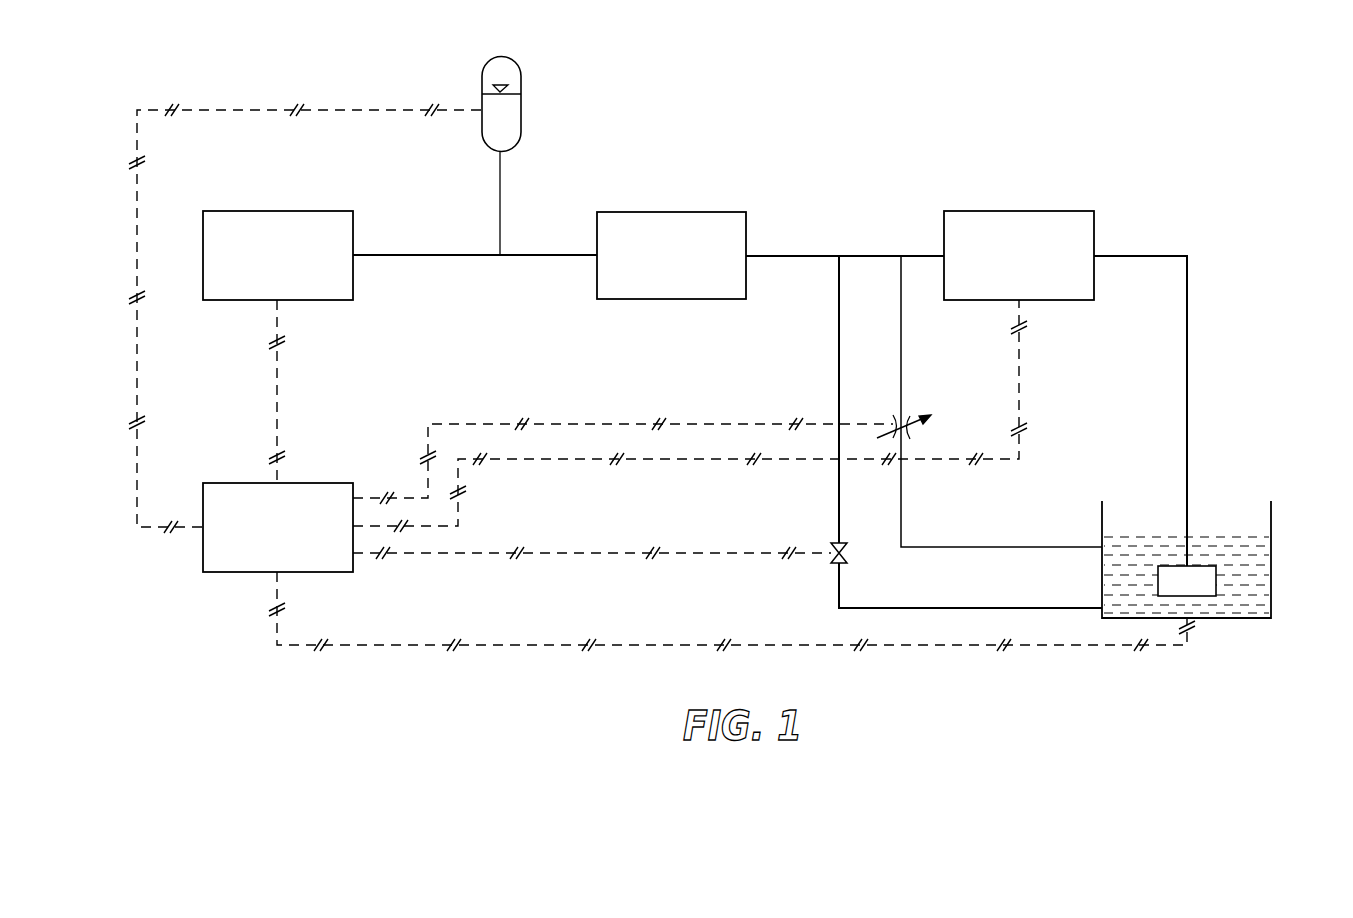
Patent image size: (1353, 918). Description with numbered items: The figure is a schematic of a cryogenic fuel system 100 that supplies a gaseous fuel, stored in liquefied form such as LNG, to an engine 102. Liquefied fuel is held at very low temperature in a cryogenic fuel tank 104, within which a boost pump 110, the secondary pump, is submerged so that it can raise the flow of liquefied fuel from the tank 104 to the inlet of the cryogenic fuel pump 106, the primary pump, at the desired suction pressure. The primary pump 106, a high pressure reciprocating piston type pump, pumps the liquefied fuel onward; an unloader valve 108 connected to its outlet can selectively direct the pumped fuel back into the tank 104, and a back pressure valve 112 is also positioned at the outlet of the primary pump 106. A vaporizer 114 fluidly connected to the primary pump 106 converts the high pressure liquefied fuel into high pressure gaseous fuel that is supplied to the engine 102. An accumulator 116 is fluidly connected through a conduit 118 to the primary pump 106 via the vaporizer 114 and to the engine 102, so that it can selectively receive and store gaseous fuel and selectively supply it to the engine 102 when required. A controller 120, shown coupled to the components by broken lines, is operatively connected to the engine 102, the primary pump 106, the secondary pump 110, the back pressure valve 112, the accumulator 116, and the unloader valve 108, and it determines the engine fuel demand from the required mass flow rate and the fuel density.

The fuel system 100 is at (1038, 93).
The engine 102 is at (296, 266).
The cryogenic fuel tank 104 is at (1271, 568).
The cryogenic fuel pump 106 is at (1037, 266).
The unloader valve 108 is at (848, 560).
The boost pump 110 is at (1201, 590).
The back pressure valve 112 is at (907, 440).
The vaporizer 114 is at (689, 266).
The accumulator 116 is at (521, 77).
The conduit 118 is at (413, 252).
The controller 120 is at (296, 538).